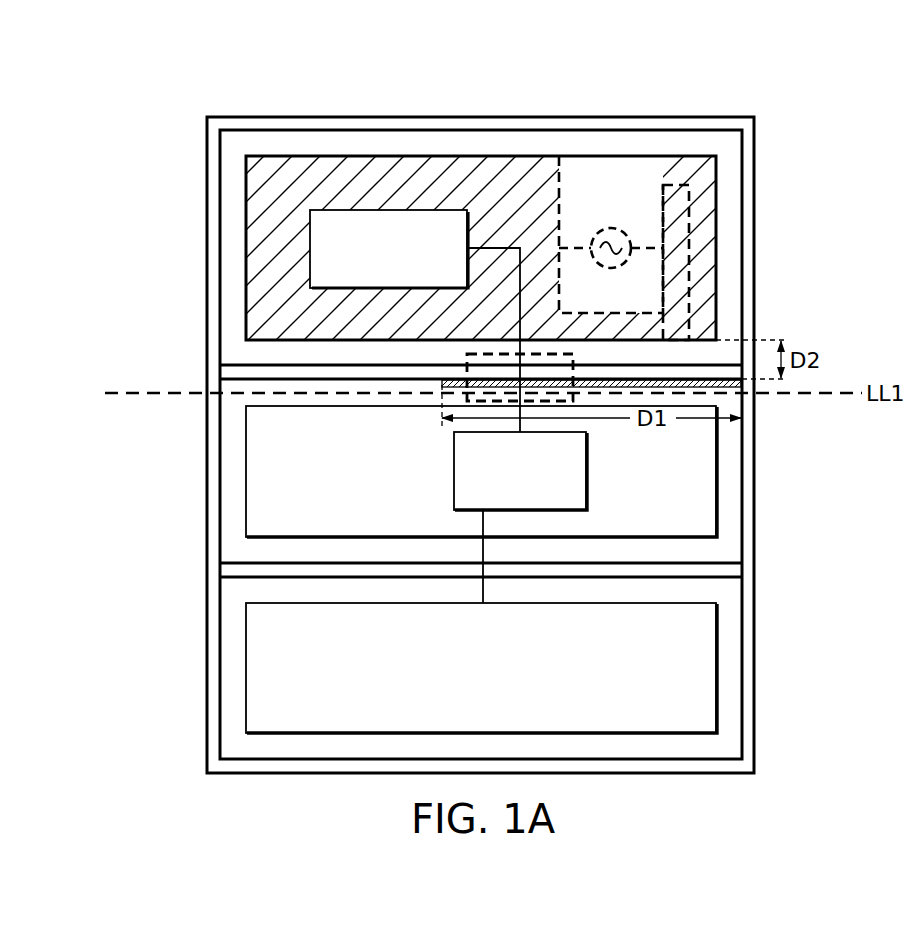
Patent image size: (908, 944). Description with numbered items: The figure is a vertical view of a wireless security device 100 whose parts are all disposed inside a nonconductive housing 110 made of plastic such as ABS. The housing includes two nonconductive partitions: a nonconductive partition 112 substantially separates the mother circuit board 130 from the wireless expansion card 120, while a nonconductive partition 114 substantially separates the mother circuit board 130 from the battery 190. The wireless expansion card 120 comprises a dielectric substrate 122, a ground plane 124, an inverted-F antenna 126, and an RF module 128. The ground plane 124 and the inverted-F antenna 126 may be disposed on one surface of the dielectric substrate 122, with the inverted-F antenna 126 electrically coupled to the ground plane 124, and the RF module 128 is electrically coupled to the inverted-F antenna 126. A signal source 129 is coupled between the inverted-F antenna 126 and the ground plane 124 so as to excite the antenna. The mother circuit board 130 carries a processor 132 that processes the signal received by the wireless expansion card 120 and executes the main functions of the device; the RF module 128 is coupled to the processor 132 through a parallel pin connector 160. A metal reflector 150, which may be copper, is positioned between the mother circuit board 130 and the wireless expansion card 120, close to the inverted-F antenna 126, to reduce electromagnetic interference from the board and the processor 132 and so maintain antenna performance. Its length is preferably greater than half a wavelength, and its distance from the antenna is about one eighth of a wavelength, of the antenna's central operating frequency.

The wireless security device 100 is at (786, 91).
The nonconductive housing 110 is at (352, 127).
The nonconductive partition 112 is at (237, 374).
The nonconductive partition 114 is at (233, 572).
The wireless expansion card 120 is at (716, 223).
The dielectric substrate 122 is at (643, 198).
The ground plane 124 is at (261, 243).
The inverted-F antenna 126 is at (679, 273).
The RF module 128 is at (370, 274).
The signal source 129 is at (611, 228).
The mother circuit board 130 is at (245, 472).
The processor 132 is at (501, 499).
The metal reflector 150 is at (443, 383).
The parallel pin connector 160 is at (441, 403).
The battery 190 is at (462, 694).